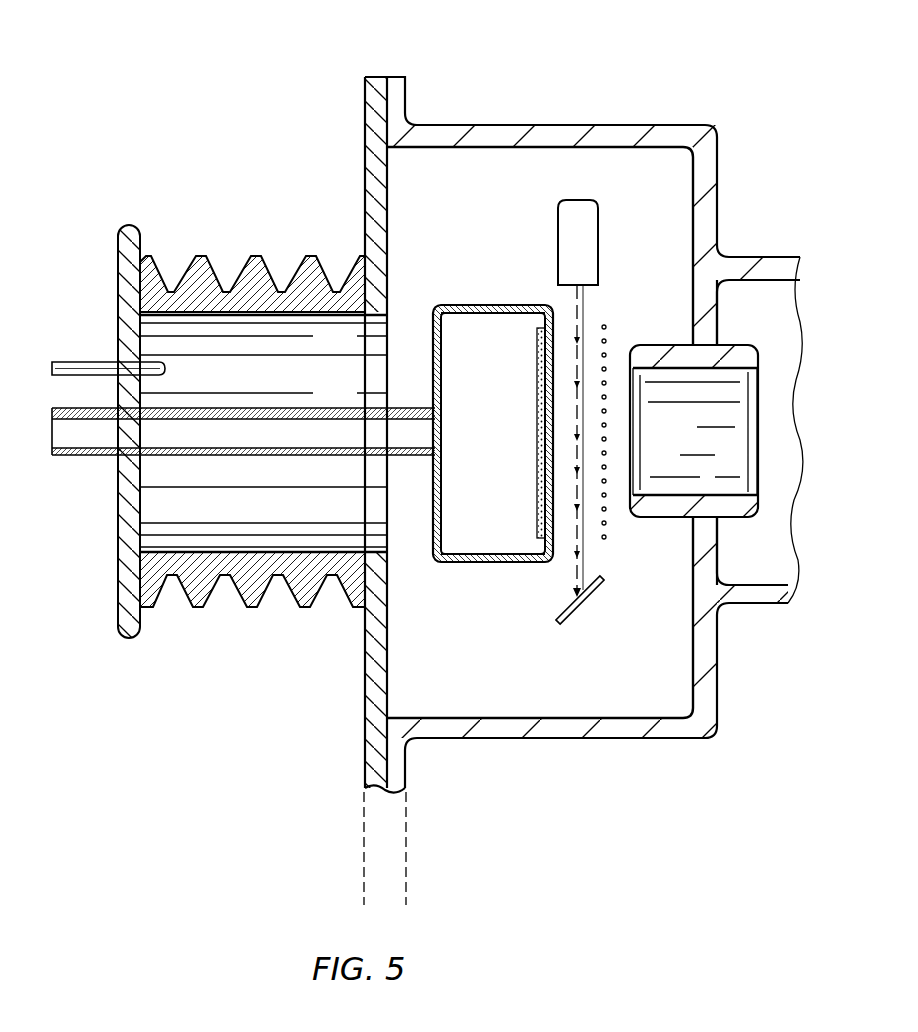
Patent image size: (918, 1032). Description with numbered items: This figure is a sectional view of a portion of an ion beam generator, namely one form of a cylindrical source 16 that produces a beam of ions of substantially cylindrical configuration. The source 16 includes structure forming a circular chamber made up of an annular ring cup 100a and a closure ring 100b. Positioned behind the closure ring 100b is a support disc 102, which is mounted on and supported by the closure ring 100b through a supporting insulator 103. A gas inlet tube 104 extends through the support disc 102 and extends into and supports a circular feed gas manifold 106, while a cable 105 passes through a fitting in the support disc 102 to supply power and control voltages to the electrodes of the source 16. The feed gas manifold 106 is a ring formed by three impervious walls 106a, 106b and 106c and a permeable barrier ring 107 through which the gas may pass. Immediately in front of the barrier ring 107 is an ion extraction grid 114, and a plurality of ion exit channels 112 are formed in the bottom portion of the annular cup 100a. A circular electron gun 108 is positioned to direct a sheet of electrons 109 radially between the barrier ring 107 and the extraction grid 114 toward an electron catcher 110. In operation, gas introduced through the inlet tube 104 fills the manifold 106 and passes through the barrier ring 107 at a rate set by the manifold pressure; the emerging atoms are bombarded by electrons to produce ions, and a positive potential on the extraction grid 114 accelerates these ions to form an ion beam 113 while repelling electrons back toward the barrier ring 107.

The source 16 is at (408, 28).
The annular ring cup 100a is at (508, 727).
The closure ring 100b is at (367, 677).
The support disc 102 is at (125, 580).
The supporting insulator 103 is at (258, 607).
The gas inlet tube 104 is at (105, 457).
The cable 105 is at (80, 362).
The feed gas manifold 106 is at (487, 305).
The impervious wall 106a is at (516, 318).
The impervious wall 106b is at (441, 386).
The impervious wall 106c is at (485, 552).
The permeable barrier ring 107 is at (537, 425).
The electron gun 108 is at (598, 228).
The sheet of electrons 109 is at (583, 335).
The electron catcher 110 is at (588, 598).
The ion exit channels 112 is at (786, 437).
The ion beam 113 is at (712, 437).
The ion extraction grid 114 is at (608, 518).